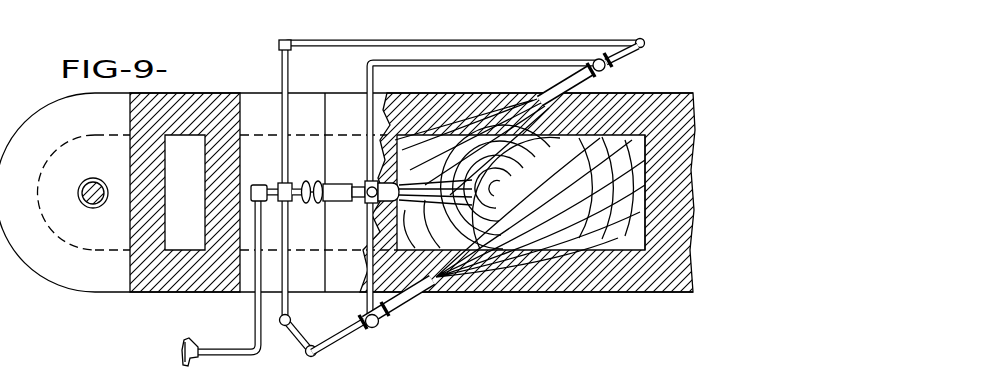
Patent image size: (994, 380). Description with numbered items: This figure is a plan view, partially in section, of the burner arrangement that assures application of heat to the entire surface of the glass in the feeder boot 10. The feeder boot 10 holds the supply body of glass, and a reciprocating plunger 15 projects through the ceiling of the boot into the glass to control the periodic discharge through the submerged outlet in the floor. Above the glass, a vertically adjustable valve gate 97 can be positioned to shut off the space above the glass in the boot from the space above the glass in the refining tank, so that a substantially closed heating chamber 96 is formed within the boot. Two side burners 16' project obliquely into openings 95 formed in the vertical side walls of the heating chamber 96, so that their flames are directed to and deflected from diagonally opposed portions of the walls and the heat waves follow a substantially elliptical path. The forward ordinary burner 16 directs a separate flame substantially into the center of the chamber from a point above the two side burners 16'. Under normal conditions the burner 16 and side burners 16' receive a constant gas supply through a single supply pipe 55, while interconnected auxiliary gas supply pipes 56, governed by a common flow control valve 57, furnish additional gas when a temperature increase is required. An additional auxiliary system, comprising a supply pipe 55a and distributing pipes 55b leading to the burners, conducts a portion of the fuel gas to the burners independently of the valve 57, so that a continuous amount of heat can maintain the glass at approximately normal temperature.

The feeder boot 10 is at (42, 270).
The reciprocating plunger 15 is at (80, 191).
The burner 16 is at (425, 203).
The side burners 16' is at (475, 199).
The supply pipe 55 is at (258, 327).
The auxiliary supply pipe 55a is at (370, 201).
The distributing pipes 55b is at (362, 155).
The auxiliary gas supply pipes 56 is at (438, 40).
The flow control valve 57 is at (188, 366).
The openings 95 is at (519, 105).
The heating chamber 96 is at (582, 243).
The valve gate 97 is at (690, 207).